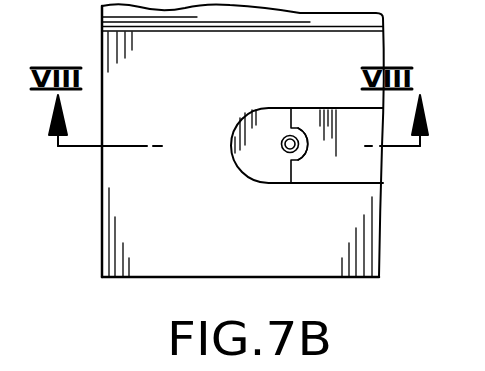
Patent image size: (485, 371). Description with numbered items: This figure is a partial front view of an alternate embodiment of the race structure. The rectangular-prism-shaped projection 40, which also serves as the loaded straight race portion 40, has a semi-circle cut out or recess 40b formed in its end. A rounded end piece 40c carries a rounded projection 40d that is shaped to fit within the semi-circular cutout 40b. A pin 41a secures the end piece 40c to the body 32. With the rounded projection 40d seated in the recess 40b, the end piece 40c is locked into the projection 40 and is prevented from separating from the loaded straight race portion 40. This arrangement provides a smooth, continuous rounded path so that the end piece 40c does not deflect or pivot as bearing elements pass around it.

The body 32 is at (298, 260).
The rectangular-prism-shaped projection 40 is at (352, 170).
The semi-circular cutout 40b is at (300, 133).
The rounded end piece 40c is at (263, 125).
The rounded projection 40d is at (299, 131).
The pin 41a is at (283, 150).